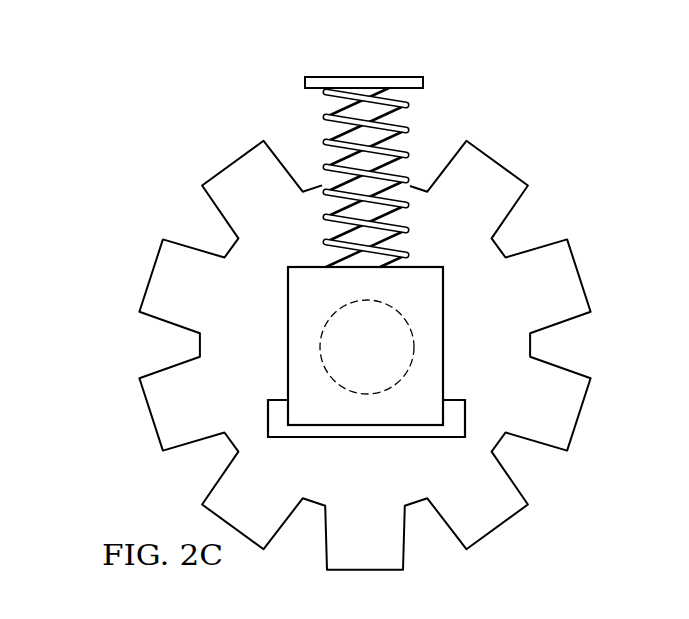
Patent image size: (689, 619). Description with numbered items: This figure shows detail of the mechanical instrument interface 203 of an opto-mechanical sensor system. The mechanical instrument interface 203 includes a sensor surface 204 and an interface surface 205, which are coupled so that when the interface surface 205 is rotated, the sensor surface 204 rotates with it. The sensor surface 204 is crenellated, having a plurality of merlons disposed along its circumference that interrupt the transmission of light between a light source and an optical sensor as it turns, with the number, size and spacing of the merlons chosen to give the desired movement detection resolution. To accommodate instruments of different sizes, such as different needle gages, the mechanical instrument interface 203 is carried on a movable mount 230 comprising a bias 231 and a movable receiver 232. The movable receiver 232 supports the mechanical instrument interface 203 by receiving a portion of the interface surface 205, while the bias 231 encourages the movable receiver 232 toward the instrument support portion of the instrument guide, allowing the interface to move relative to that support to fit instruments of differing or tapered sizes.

The mechanical instrument interface 203 is at (516, 148).
The sensor surface 204 is at (383, 487).
The interface surface 205 is at (385, 361).
The movable mount 230 is at (410, 69).
The bias 231 is at (322, 120).
The movable receiver 232 is at (296, 349).